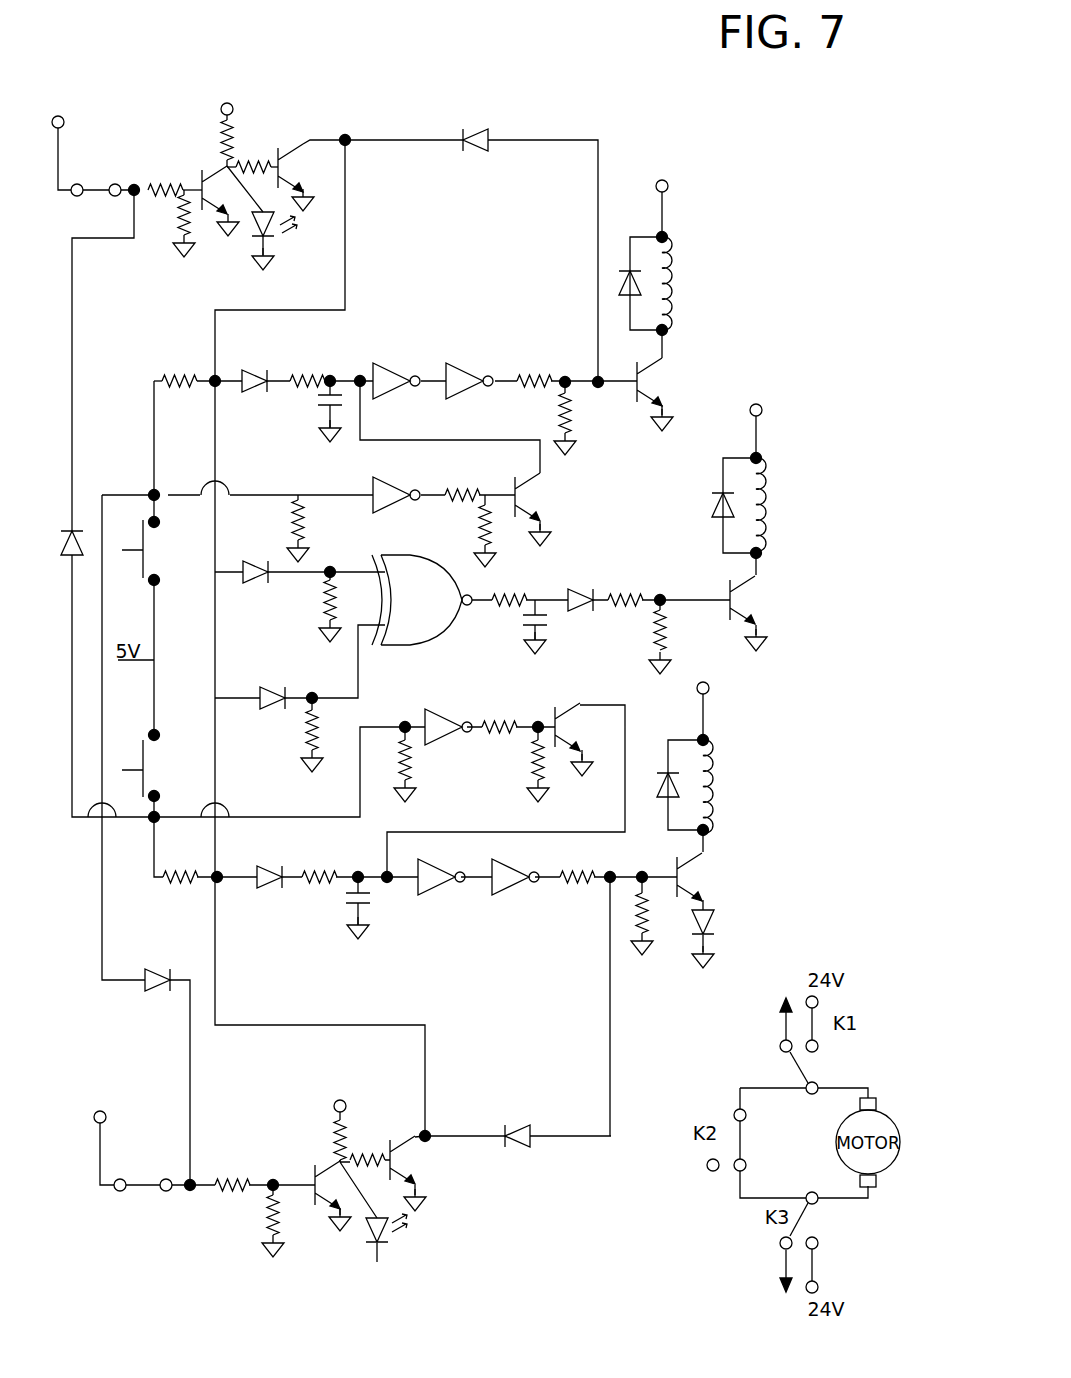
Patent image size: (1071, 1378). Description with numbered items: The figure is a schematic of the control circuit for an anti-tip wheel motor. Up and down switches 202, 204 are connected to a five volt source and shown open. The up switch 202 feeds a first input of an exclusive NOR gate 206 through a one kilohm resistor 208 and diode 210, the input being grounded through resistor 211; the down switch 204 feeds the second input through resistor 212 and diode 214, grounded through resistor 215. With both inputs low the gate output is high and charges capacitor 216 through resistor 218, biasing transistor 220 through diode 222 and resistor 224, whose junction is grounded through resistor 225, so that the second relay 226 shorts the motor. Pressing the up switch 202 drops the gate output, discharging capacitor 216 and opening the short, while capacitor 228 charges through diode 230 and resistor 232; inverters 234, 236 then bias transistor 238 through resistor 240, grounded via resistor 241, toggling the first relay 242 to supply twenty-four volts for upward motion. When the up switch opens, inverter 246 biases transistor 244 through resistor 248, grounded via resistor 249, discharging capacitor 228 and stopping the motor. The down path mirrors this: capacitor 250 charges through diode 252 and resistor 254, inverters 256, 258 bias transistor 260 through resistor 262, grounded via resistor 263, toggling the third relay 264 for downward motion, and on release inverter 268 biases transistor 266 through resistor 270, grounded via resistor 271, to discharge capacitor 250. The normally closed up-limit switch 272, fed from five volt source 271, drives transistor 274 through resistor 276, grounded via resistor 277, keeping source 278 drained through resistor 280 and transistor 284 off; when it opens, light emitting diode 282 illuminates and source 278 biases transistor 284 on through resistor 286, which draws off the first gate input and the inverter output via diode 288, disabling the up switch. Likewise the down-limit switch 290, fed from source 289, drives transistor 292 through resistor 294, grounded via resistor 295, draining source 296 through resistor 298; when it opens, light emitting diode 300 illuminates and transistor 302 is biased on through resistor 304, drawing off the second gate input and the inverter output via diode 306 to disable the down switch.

The up switch 202 is at (148, 545).
The down switch 204 is at (150, 768).
The exclusive NOR gate 206 is at (428, 633).
The 1 K resistor 208 is at (185, 375).
The diode 210 is at (258, 588).
The 51 K resistor 211 is at (325, 605).
The 1 K resistor 212 is at (178, 888).
The diode 214 is at (262, 690).
The 51 K resistor 215 is at (305, 730).
The 10 microfarad capacitor 216 is at (552, 622).
The 10 K resistor 218 is at (505, 593).
The bipolar transistor 220 is at (752, 598).
The diode 222 is at (582, 588).
The 1 K resistor 224 is at (625, 595).
The 51 K resistor 225 is at (665, 627).
The relay K2 226 is at (818, 506).
The 47 microfarad capacitor 228 is at (323, 402).
The diode 230 is at (255, 372).
The 33 K resistor 232 is at (312, 375).
The inverter 234 is at (392, 365).
The inverter 236 is at (465, 365).
The transistor 238 is at (648, 380).
The 1 K resistor 240 is at (535, 375).
The 51 K resistor 241 is at (573, 410).
The relay K1 242 is at (745, 285).
The transistor 244 is at (532, 495).
The inverter 246 is at (405, 488).
The 1 K resistor 248 is at (468, 490).
The 51 K resistor 249 is at (482, 520).
The 47 microfarad capacitor 250 is at (350, 900).
The diode 252 is at (268, 890).
The 33 K resistor 254 is at (320, 870).
The inverter 256 is at (440, 893).
The inverter 258 is at (506, 893).
The transistor 260 is at (692, 878).
The 1 K resistor 262 is at (578, 888).
The 51 K resistor 263 is at (652, 920).
The relay K3 264 is at (766, 787).
The transistor 266 is at (565, 722).
The inverter 268 is at (440, 745).
The 1 K resistor 270 is at (497, 737).
The 51 K resistor 271 is at (58, 116).
The up-limit switch 272 is at (100, 184).
The transistor 274 is at (235, 205).
The 1 K resistor 276 is at (164, 184).
The resistor 277 is at (180, 215).
The 5 volt source 278 is at (221, 108).
The 1 K resistor 280 is at (235, 130).
The light emitting diode 282 is at (305, 233).
The second transistor 284 is at (300, 168).
The 10 K resistor 286 is at (258, 160).
The diode 288 is at (470, 152).
The 5 volt source 289 is at (107, 1117).
The down-limit switch 290 is at (143, 1192).
The transistor 292 is at (318, 1208).
The 1 K resistor 294 is at (232, 1180).
The resistor 295 is at (266, 1220).
The 5 volt source 296 is at (348, 1105).
The 1 K resistor 298 is at (335, 1138).
The light emitting diode 300 is at (405, 1250).
The transistor 302 is at (405, 1163).
The 10 K resistor 304 is at (370, 1158).
The diode 306 is at (518, 1148).